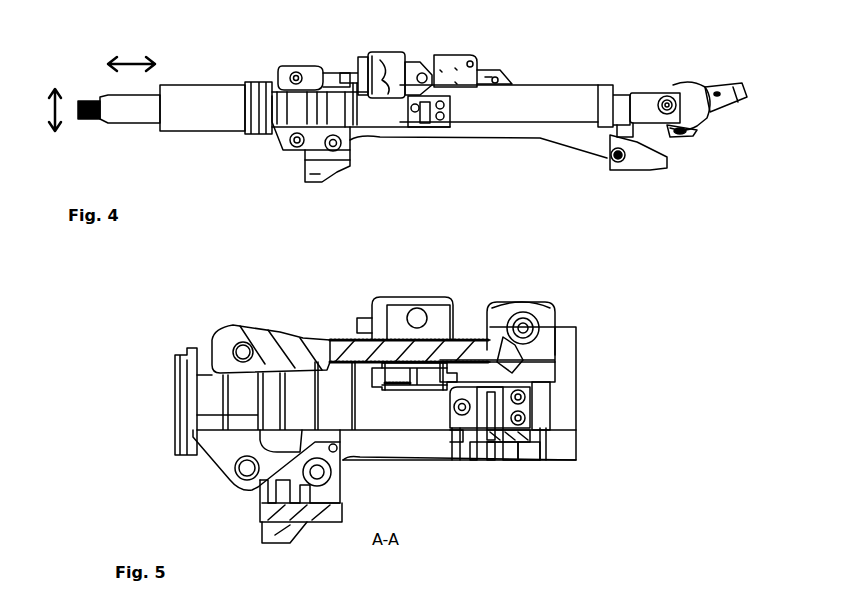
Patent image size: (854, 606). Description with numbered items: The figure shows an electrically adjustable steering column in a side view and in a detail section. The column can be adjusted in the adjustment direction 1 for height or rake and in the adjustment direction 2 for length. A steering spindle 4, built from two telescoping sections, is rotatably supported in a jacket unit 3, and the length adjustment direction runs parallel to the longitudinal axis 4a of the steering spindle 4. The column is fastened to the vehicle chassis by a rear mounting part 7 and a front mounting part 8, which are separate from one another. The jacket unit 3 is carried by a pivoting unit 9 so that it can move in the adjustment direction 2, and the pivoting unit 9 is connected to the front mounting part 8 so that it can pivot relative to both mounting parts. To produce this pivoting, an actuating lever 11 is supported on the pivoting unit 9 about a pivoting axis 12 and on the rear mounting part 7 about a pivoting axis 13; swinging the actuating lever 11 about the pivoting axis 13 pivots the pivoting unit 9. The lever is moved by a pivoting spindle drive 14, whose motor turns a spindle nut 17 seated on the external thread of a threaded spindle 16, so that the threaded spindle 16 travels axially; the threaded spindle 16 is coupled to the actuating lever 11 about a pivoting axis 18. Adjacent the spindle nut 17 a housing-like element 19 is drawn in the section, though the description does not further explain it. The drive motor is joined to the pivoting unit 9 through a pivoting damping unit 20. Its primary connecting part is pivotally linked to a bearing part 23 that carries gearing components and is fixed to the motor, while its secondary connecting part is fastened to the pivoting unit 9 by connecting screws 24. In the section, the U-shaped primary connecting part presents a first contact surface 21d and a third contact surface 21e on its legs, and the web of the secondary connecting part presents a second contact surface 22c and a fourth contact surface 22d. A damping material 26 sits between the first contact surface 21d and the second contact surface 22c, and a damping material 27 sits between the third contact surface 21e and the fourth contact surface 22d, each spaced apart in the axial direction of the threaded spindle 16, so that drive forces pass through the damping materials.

In FIG. 4, the adjustment direction 1 is at (58, 130).
In FIG. 4, the adjustment direction 2 is at (136, 52).
In FIG. 4, the jacket unit 3 is at (214, 74).
In FIG. 5, the jacket unit 3 is at (410, 351).
In FIG. 4, the steering spindle 4 is at (160, 80).
In FIG. 4, the longitudinal axis 4a is at (70, 108).
In FIG. 4, the rear mounting part 7 is at (316, 172).
In FIG. 4, the front mounting part 8 is at (634, 162).
In FIG. 4, the pivoting unit 9 is at (394, 145).
In FIG. 5, the pivoting unit 9 is at (365, 460).
In FIG. 4, the actuating lever 11 is at (276, 115).
In FIG. 5, the actuating lever 11 is at (238, 432).
In FIG. 4, the pivoting axis 12 is at (292, 152).
In FIG. 5, the pivoting axis 12 is at (238, 483).
In FIG. 4, the pivoting axis 13 is at (340, 165).
In FIG. 5, the pivoting axis 13 is at (274, 540).
In FIG. 4, the pivoting spindle drive 14 is at (409, 45).
In FIG. 4, the threaded spindle 16 is at (364, 52).
In FIG. 5, the threaded spindle 16 is at (360, 345).
In FIG. 5, the spindle nut 17 is at (395, 370).
In FIG. 4, the pivoting axis 18 is at (300, 62).
In FIG. 5, the pivoting axis 18 is at (238, 342).
In FIG. 5, the housing 19 is at (395, 298).
In FIG. 4, the pivoting damping unit 20 is at (436, 140).
In FIG. 5, the pivoting damping unit 20 is at (542, 414).
In FIG. 5, the first contact surface 21d is at (470, 440).
In FIG. 5, the third contact surface 21e is at (503, 444).
In FIG. 5, the second contact surface 22c is at (483, 445).
In FIG. 5, the fourth contact surface 22d is at (497, 445).
In FIG. 5, the bearing part 23 is at (445, 322).
In FIG. 5, the connecting screws 24 is at (448, 450).
In FIG. 5, the damping material 26 is at (498, 372).
In FIG. 5, the damping material 27 is at (530, 378).